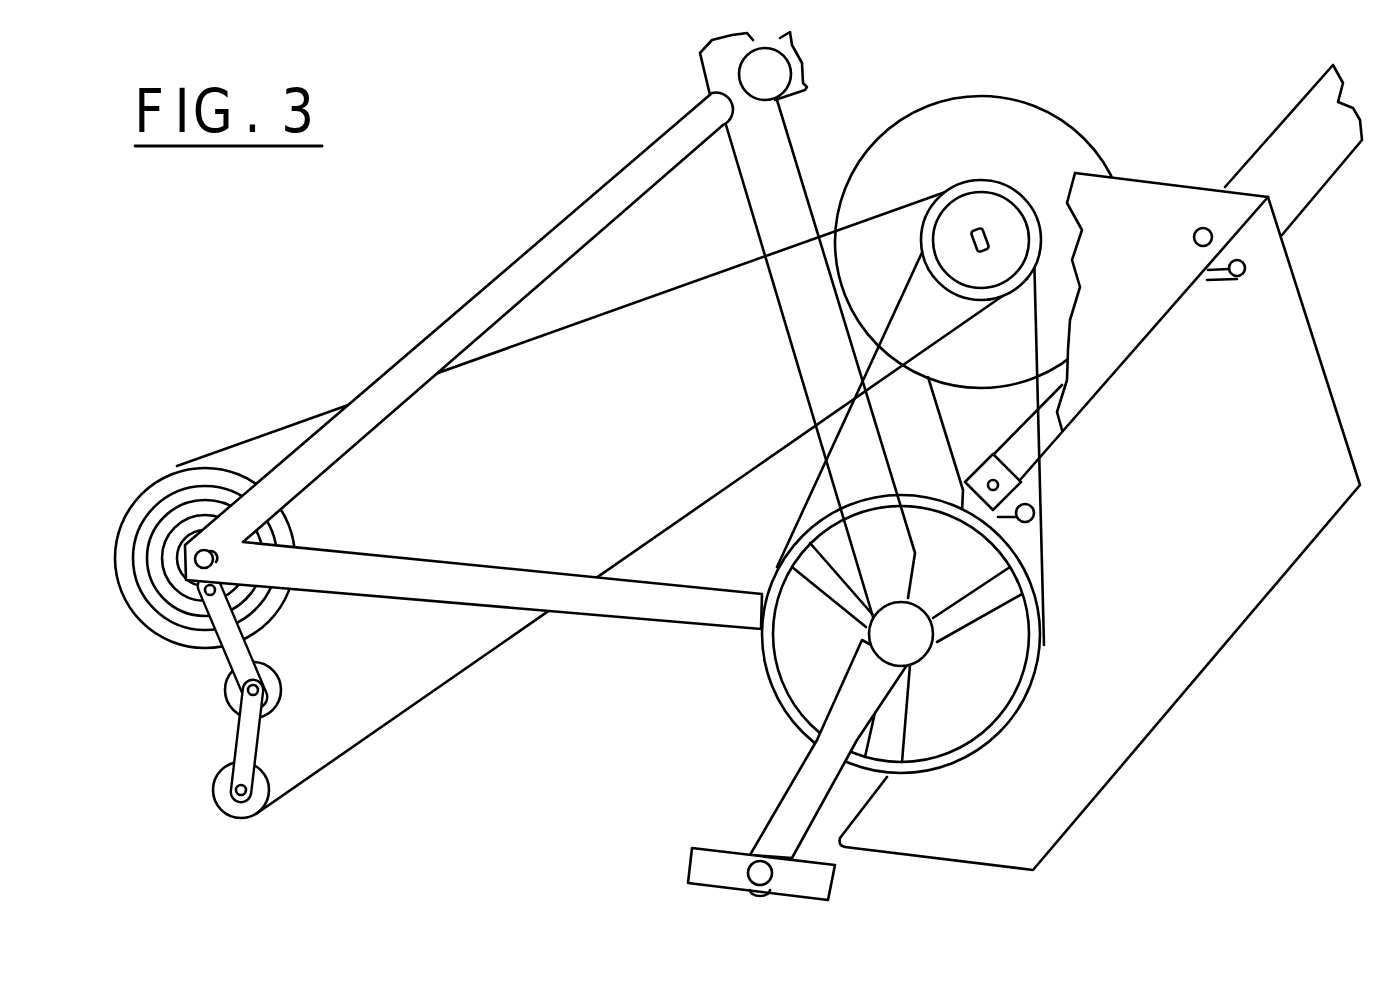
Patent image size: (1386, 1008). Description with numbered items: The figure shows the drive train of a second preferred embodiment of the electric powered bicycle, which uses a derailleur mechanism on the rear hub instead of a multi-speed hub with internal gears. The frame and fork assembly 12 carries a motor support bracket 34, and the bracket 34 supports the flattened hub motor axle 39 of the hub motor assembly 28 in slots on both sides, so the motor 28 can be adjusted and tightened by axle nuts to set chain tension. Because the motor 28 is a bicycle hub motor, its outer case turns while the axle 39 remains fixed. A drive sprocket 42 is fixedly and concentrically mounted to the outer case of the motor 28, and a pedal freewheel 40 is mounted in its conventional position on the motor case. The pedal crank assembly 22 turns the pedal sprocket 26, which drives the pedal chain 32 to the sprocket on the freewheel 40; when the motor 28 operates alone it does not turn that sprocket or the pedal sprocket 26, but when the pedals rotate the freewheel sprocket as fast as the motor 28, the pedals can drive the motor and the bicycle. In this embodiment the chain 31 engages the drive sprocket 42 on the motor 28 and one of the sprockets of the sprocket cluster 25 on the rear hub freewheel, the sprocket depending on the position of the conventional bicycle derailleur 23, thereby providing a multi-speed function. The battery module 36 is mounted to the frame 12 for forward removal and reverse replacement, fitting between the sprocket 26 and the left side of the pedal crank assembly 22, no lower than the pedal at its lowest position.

The frame and fork assembly 12 is at (635, 170).
The pedal crank assembly 22 is at (785, 823).
The bicycle derailleur 23 is at (247, 730).
The sprocket cluster 25 is at (165, 487).
The pedal sprocket 26 is at (773, 670).
The hub motor assembly 28 is at (944, 166).
The chain 31 is at (568, 327).
The pedal chain 32 is at (1040, 550).
The motor support bracket 34 is at (1142, 218).
The battery module 36 is at (1229, 462).
The hub motor axle 39 is at (978, 226).
The pedal freewheel 40 is at (995, 210).
The drive sprocket 42 is at (1040, 187).